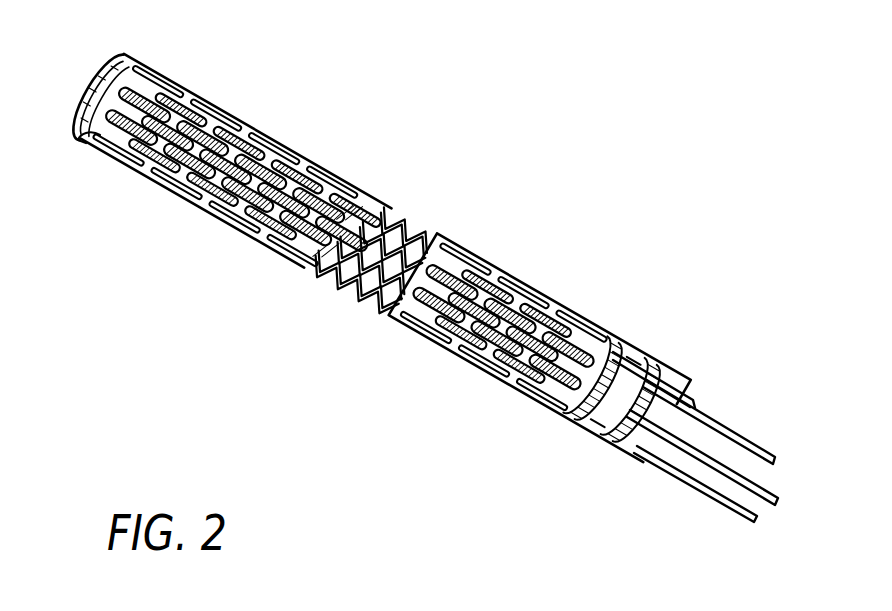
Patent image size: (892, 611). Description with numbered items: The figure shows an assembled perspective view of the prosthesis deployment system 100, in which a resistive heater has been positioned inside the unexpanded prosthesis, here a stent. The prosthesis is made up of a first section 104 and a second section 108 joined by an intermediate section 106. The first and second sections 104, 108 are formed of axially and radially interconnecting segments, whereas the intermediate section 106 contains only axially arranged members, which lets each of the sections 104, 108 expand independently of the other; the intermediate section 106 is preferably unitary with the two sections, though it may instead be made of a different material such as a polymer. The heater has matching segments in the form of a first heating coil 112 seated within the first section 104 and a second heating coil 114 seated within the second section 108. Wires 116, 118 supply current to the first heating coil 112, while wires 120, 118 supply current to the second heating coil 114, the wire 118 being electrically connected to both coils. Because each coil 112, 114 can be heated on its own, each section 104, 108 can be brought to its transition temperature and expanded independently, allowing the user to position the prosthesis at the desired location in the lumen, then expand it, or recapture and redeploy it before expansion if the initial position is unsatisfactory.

The prosthesis deployment system 100 is at (435, 282).
The first section 104 is at (273, 112).
The intermediate section 106 is at (415, 192).
The second section 108 is at (585, 270).
The first heating coil 112 is at (110, 132).
The second heating coil 114 is at (588, 346).
The wire 116 is at (700, 415).
The wire 118 is at (712, 498).
The wire 120 is at (763, 490).